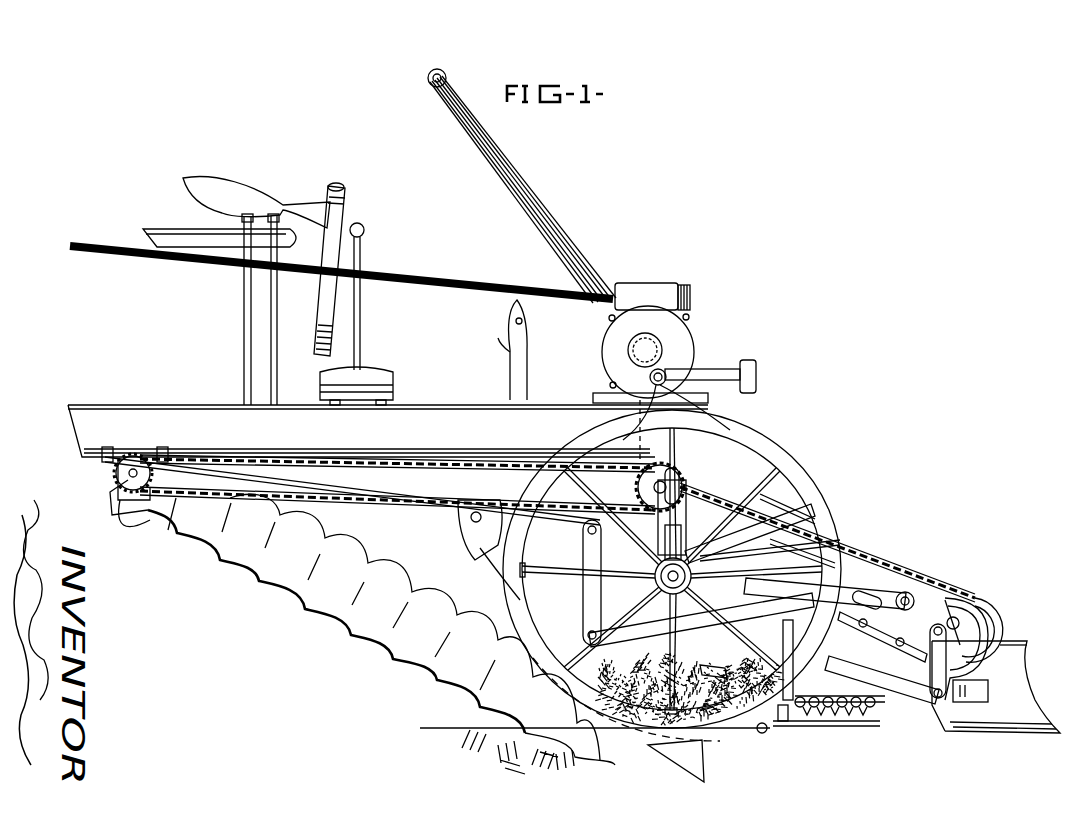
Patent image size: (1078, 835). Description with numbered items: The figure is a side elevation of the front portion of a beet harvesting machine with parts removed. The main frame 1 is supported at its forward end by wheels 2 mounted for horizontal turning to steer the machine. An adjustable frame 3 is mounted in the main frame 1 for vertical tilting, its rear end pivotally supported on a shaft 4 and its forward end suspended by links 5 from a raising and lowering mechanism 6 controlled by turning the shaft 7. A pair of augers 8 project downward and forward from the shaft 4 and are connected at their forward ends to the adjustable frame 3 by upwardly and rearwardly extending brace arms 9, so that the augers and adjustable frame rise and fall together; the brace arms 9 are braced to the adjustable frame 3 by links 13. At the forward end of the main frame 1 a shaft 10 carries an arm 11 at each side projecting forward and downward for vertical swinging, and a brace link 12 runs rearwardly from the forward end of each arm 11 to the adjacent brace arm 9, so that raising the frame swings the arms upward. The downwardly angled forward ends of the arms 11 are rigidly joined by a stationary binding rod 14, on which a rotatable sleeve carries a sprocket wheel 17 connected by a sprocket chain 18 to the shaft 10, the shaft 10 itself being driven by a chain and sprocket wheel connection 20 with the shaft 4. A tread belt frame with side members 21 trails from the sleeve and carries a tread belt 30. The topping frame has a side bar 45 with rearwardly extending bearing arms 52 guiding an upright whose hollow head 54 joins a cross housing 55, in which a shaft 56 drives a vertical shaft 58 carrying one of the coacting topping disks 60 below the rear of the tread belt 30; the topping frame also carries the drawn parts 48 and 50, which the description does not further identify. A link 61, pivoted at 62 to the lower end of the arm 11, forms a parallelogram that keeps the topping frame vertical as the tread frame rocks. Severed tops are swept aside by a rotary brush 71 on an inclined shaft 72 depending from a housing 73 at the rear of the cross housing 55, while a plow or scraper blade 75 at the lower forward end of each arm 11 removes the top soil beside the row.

The main frame 1 is at (434, 424).
The wheels 2 is at (760, 450).
The adjustable frame 3 is at (447, 494).
The shaft 4 is at (115, 478).
The links 5 is at (640, 484).
The raising and lowering mechanism 6 is at (667, 343).
The shaft 7 is at (433, 283).
The augers 8 is at (378, 640).
The brace arms 9 is at (493, 548).
The shaft 10 is at (680, 481).
The arms 11 is at (800, 549).
The brace link 12 is at (880, 592).
The links 13 is at (595, 600).
The cross-shaft or binding rod 14 is at (942, 632).
The sprocket wheel 17 is at (965, 623).
The sprocket chain 18 is at (906, 587).
The chain and sprocket wheel connection 20 is at (440, 466).
The side members 21 is at (870, 705).
The tread belt 30 is at (845, 708).
The side bar 45 is at (796, 660).
The link 48 is at (903, 647).
The pivot 50 is at (955, 622).
The bearing arms 52 is at (867, 598).
The hollow heads 54 is at (797, 547).
The cross housing 55 is at (783, 507).
The shaft 56 is at (760, 735).
The vertical shaft 58 is at (783, 720).
The topping disks 60 is at (822, 728).
The link 61 is at (910, 692).
The pivot 62 is at (958, 690).
The rotary brush 71 is at (724, 660).
The shaft 72 is at (701, 620).
The housing 73 is at (750, 533).
The plow or scraper blade 75 is at (1010, 681).